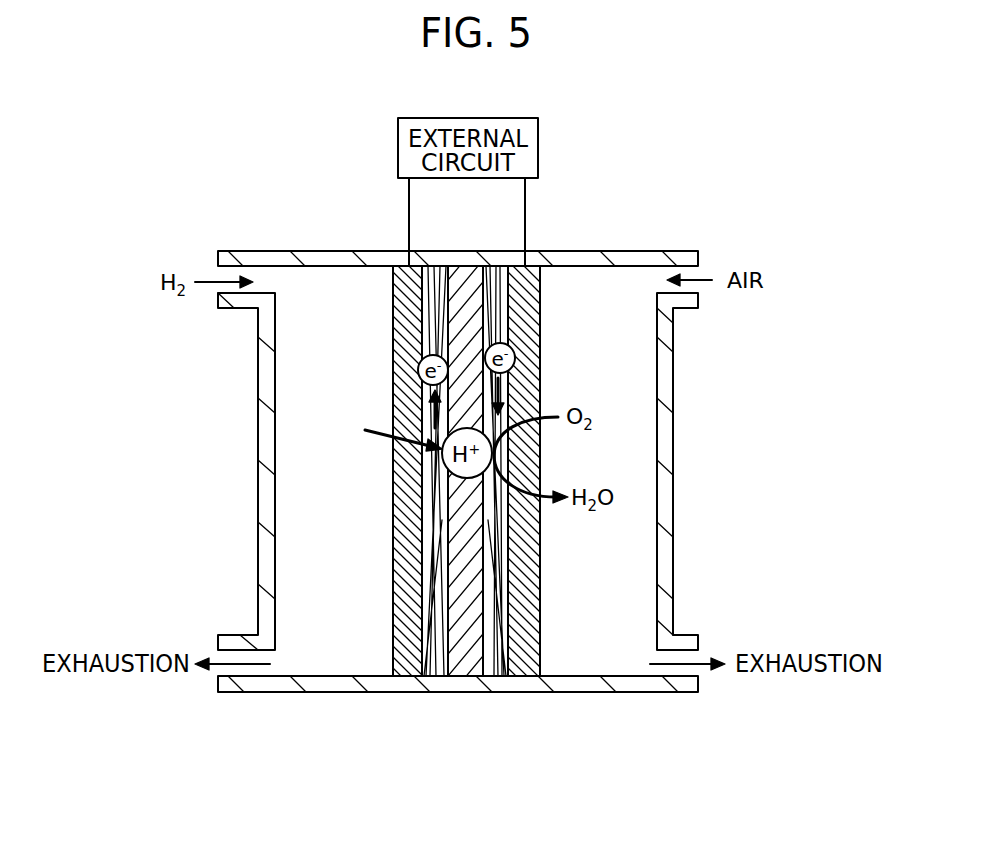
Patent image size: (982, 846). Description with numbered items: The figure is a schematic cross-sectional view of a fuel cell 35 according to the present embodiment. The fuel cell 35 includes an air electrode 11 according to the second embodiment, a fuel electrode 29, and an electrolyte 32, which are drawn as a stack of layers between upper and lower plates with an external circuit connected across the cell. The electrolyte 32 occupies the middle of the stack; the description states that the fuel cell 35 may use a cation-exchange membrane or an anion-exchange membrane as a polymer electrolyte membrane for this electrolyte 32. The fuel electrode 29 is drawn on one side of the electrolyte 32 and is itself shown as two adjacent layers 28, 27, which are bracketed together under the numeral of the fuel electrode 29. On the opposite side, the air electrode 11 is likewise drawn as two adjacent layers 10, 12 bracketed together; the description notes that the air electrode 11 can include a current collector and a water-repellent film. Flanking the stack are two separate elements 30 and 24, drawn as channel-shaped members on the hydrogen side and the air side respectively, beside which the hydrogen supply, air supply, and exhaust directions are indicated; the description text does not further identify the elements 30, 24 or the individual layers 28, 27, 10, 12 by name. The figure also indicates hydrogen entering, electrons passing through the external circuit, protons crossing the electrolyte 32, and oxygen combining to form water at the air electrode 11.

The fuel cell 35 is at (648, 222).
The electrolyte 32 is at (465, 312).
The anode side separator 30 is at (328, 510).
The cathode side separator 24 is at (625, 452).
The fuel electrode 29 is at (406, 527).
The anode gas diffusion layer 28 is at (410, 648).
The anode catalyst layer 27 is at (437, 645).
The air electrode 11 is at (522, 527).
The cathode catalyst layer 10 is at (497, 645).
The cathode gas diffusion layer 12 is at (522, 648).